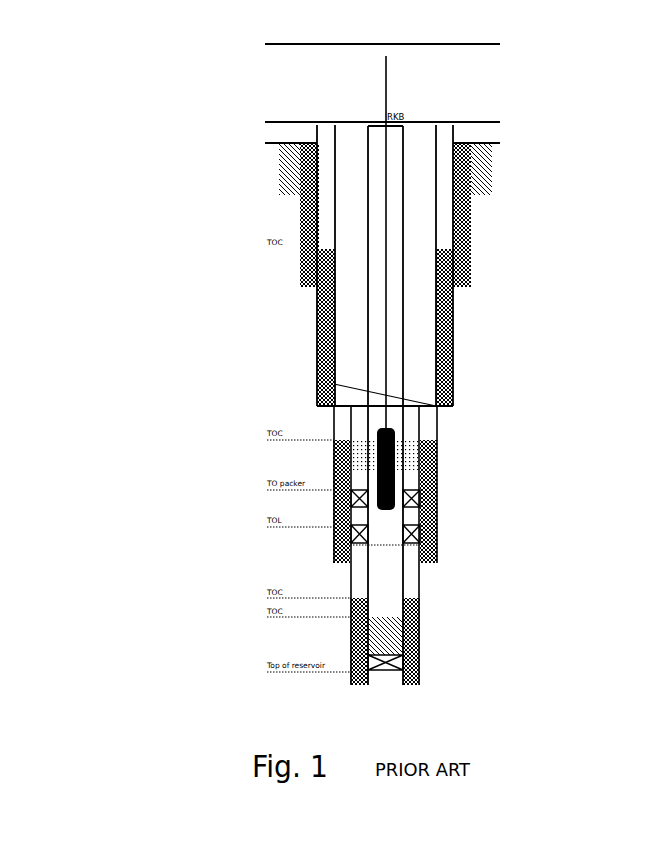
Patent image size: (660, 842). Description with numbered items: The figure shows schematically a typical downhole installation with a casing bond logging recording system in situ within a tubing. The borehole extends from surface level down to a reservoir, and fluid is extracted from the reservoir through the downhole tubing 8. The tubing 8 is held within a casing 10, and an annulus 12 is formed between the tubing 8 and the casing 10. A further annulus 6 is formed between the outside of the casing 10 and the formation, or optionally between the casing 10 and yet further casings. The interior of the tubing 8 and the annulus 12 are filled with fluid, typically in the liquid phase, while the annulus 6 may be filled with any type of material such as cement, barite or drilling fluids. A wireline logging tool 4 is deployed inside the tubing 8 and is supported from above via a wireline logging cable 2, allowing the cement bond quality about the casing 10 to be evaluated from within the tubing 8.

The wireline logging cable 2 is at (383, 240).
The wireline logging tool 4 is at (377, 453).
The annulus 6 is at (340, 497).
The tubing 8 is at (407, 420).
The casing 10 is at (426, 469).
The annulus 12 is at (418, 478).